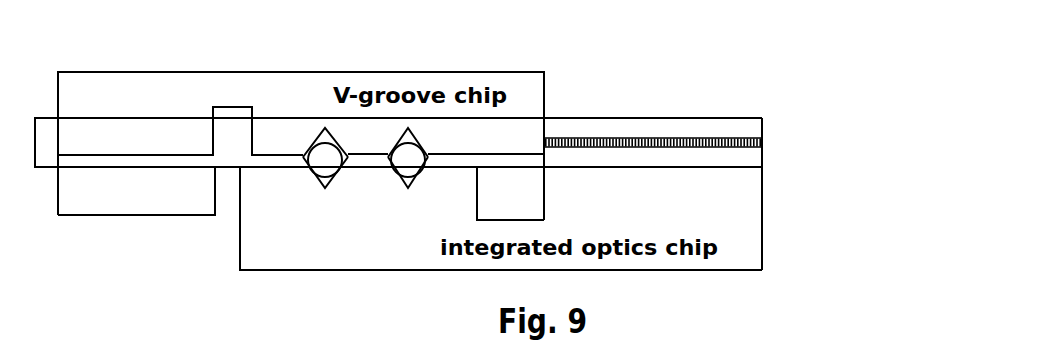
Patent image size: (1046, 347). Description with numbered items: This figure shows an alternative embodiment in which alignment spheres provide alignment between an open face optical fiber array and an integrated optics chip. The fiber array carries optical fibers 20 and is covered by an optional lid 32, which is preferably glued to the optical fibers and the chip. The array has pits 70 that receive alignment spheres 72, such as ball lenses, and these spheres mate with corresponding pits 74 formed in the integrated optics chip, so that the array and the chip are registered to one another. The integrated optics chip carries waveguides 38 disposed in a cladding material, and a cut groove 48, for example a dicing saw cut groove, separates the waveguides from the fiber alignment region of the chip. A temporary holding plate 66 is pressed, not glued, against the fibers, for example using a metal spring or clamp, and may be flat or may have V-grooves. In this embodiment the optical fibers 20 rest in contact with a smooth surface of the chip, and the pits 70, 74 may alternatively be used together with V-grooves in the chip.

The optical fibers 20 is at (40, 169).
The lid 32 is at (188, 205).
The waveguides 38 is at (600, 137).
The cut groove 48 is at (527, 210).
The temporary holding plate 66 is at (277, 167).
The pits 70 is at (323, 159).
The alignment spheres 72 is at (312, 152).
The pits 74 is at (318, 193).